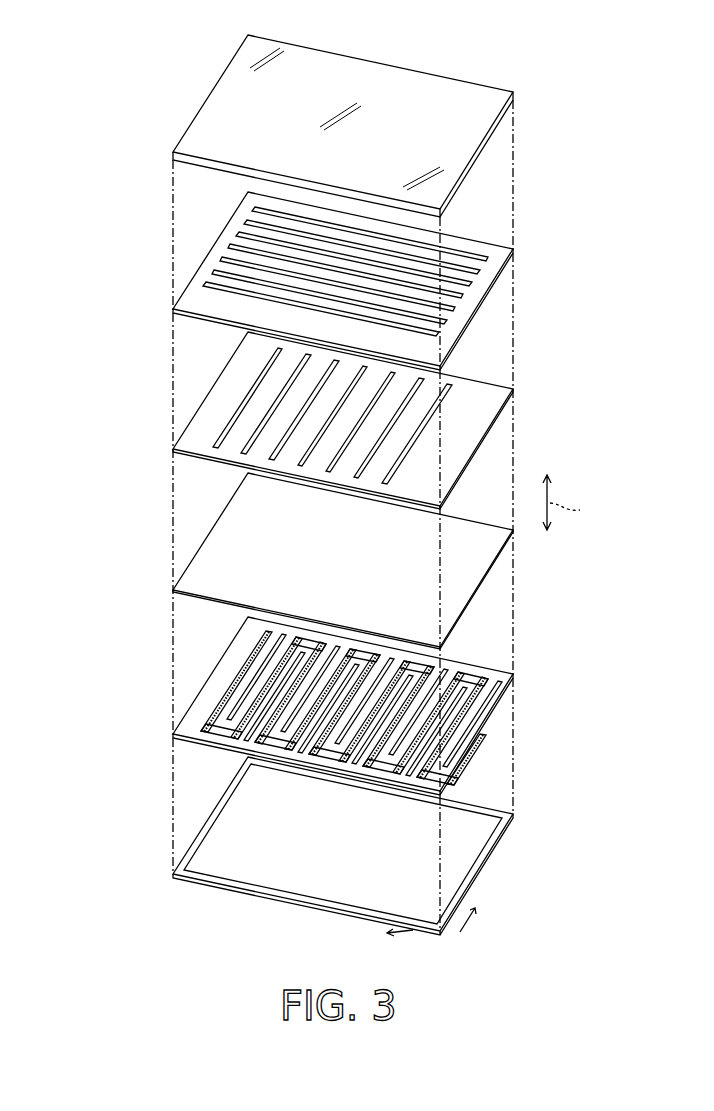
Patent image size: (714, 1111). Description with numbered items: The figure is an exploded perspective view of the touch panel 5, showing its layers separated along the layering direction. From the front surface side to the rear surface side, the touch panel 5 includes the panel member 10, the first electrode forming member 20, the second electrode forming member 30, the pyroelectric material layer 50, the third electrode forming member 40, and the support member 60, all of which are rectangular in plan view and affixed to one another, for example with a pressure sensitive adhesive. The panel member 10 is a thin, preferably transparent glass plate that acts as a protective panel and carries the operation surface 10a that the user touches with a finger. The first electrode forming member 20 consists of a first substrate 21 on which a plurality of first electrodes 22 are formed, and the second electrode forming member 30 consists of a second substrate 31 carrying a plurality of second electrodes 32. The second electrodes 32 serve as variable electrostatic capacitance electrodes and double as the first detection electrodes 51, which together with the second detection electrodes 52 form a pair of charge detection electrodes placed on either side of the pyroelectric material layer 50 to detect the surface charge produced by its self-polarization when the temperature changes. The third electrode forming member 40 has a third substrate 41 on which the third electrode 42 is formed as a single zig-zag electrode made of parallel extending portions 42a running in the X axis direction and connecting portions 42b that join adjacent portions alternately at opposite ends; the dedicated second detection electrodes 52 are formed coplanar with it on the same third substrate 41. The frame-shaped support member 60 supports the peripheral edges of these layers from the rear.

The touch panel 5 is at (102, 112).
The panel member 10 is at (498, 133).
The operation surface 10a is at (428, 100).
The first electrode forming member 20 is at (490, 237).
The first substrate 21 is at (498, 255).
The first electrodes 22 is at (487, 287).
The second electrode forming member 30 is at (503, 380).
The second substrate 31 is at (498, 420).
The second electrodes 32 is at (242, 447).
The first detection electrodes 51 is at (332, 416).
The pyroelectric material layer 50 is at (485, 560).
The third electrode forming member 40 is at (495, 660).
The third substrate 41 is at (488, 698).
The third electrode 42 is at (129, 663).
The parallel extending portions 42a is at (240, 690).
The connecting portions 42b is at (203, 742).
The second detection electrodes 52 is at (327, 640).
The support member 60 is at (495, 855).